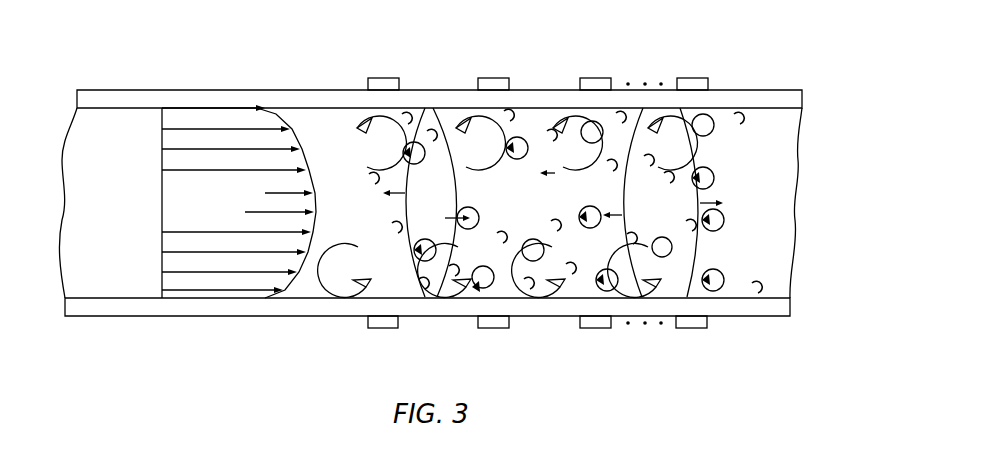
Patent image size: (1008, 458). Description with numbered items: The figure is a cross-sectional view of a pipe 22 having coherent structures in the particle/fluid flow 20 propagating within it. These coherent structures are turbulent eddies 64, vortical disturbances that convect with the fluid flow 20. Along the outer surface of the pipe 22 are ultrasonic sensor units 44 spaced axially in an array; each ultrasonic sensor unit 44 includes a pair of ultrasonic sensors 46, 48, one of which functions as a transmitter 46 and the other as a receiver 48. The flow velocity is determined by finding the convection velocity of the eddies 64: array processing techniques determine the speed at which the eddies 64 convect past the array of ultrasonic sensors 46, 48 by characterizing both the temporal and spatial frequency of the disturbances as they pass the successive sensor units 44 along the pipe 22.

The particle/fluid flow 20 is at (322, 140).
The pipe 22 is at (144, 100).
The ultrasonic sensor unit 44 is at (581, 189).
The ultrasonic sensor (transmitter) 46 is at (382, 78).
The ultrasonic sensor (receiver) 48 is at (380, 328).
The turbulent eddies 64 is at (697, 147).